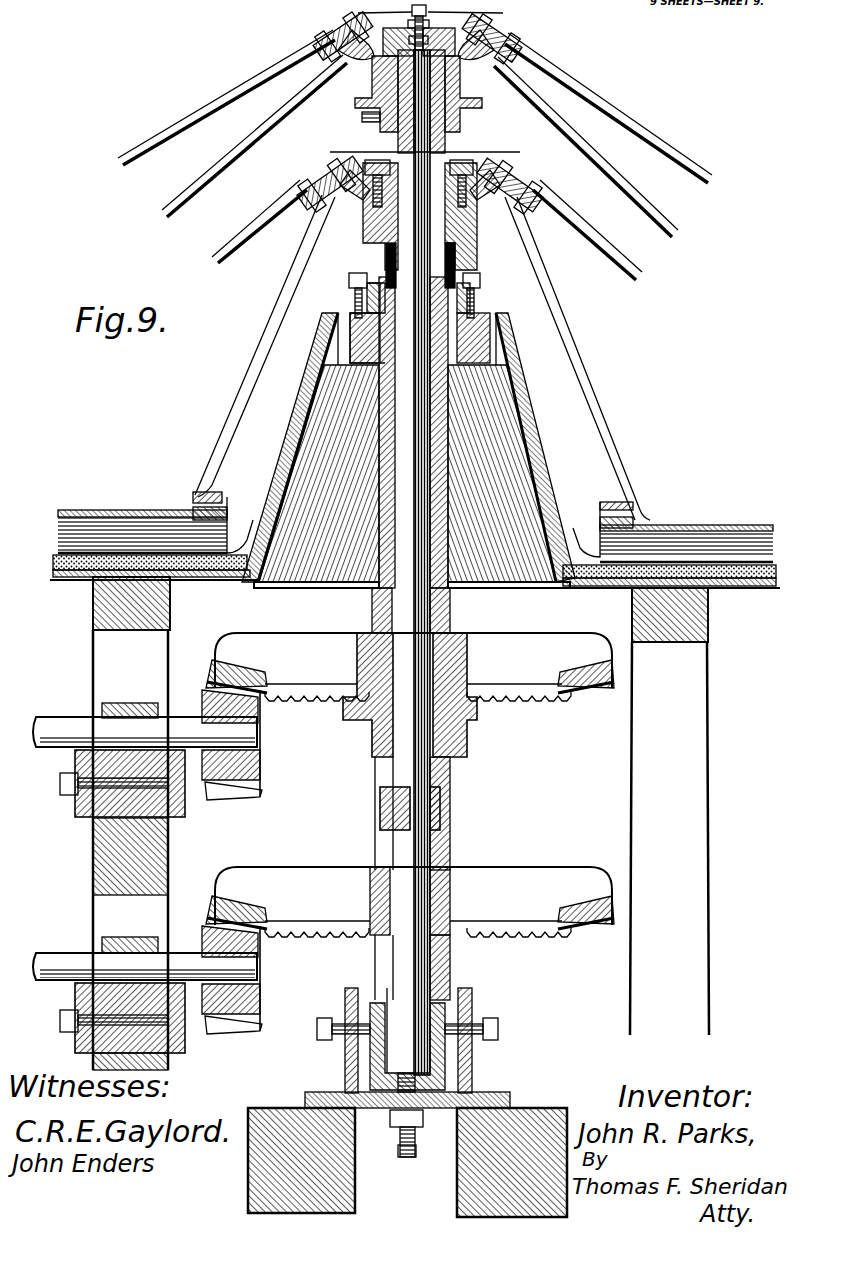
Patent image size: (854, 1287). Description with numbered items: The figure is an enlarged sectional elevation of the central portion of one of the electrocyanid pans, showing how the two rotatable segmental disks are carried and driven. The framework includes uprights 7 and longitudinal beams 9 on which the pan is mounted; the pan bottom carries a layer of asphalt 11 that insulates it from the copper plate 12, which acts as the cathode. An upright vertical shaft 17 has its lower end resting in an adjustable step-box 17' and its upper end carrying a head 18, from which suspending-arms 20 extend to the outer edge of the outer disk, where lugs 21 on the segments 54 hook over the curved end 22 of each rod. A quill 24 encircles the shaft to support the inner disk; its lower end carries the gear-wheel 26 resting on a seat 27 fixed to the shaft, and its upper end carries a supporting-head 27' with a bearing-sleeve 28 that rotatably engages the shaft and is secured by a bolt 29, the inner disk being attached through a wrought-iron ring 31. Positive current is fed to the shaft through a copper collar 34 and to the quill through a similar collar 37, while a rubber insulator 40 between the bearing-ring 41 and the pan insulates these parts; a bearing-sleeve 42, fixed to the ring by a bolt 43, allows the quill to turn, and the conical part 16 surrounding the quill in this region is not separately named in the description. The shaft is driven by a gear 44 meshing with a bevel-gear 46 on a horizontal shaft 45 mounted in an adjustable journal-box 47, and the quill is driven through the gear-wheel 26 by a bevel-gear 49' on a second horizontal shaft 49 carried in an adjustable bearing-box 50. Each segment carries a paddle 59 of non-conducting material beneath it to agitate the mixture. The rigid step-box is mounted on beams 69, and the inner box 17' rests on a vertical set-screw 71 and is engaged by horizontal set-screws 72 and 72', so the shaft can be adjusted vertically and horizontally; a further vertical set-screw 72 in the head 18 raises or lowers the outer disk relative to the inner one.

The uprights 7 is at (93, 898).
The longitudinal beams 9 is at (92, 610).
The layer of asphalt 11 is at (55, 568).
The copper plate 12 is at (60, 553).
The conical drum 16 is at (417, 392).
The upright vertical shaft 17 is at (447, 562).
The adjustable step-box 17' is at (428, 1040).
The head 18 is at (465, 98).
The suspending-arms 20 is at (190, 122).
The lugs 21 is at (222, 492).
The curved end 22 is at (192, 492).
The quill 24 is at (446, 523).
The gear-wheel 26 is at (410, 667).
The seat 27 is at (418, 695).
The supporting-head 27' is at (425, 220).
The bearing-sleeve 28 is at (378, 163).
The bolt 29 is at (330, 200).
The wrought-iron ring 31 is at (228, 513).
The copper ring or collar 34 is at (442, 806).
The copper ring or collar 37 is at (451, 613).
The rubber insulator 40 is at (322, 345).
The bearing-ring 41 is at (412, 476).
The bearing-sleeve 42 is at (355, 296).
The bolt 43 is at (350, 312).
The gear 44 is at (410, 902).
The horizontal shaft 45 is at (52, 953).
The bevel-gear 46 is at (237, 1015).
The journal-box 47 is at (75, 1000).
The horizontal shaft 49 is at (145, 717).
The bevel-gear 49' is at (247, 748).
The adjustable bearing-box 50 is at (75, 762).
The segments 54 is at (104, 510).
The paddle 59 is at (415, 537).
The beams 69 is at (456, 1190).
The vertical set-screw 71 is at (398, 1151).
The horizontal set-screw 72 is at (413, 1012).
The horizontal set-screw 72' is at (435, 27).